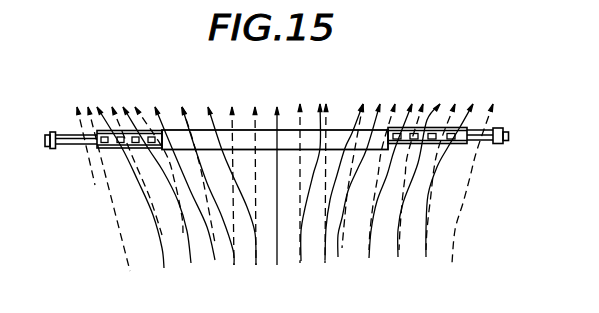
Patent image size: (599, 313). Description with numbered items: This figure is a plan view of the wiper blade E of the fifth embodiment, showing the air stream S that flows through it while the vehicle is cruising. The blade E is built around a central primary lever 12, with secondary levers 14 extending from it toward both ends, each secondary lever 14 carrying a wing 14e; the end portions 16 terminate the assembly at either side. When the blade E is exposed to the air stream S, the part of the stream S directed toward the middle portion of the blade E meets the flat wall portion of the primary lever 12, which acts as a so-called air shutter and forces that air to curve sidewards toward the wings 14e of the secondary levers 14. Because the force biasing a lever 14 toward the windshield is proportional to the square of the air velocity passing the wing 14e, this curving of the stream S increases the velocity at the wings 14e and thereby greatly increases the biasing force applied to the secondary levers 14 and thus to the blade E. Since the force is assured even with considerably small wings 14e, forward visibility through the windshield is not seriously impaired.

The primary lever 12 is at (340, 135).
The secondary lever 14 is at (147, 130).
The wing 14e is at (111, 137).
The end shaft with fastener head 16 is at (67, 136).
The wiper blade E is at (340, 90).
The air stream S is at (188, 255).